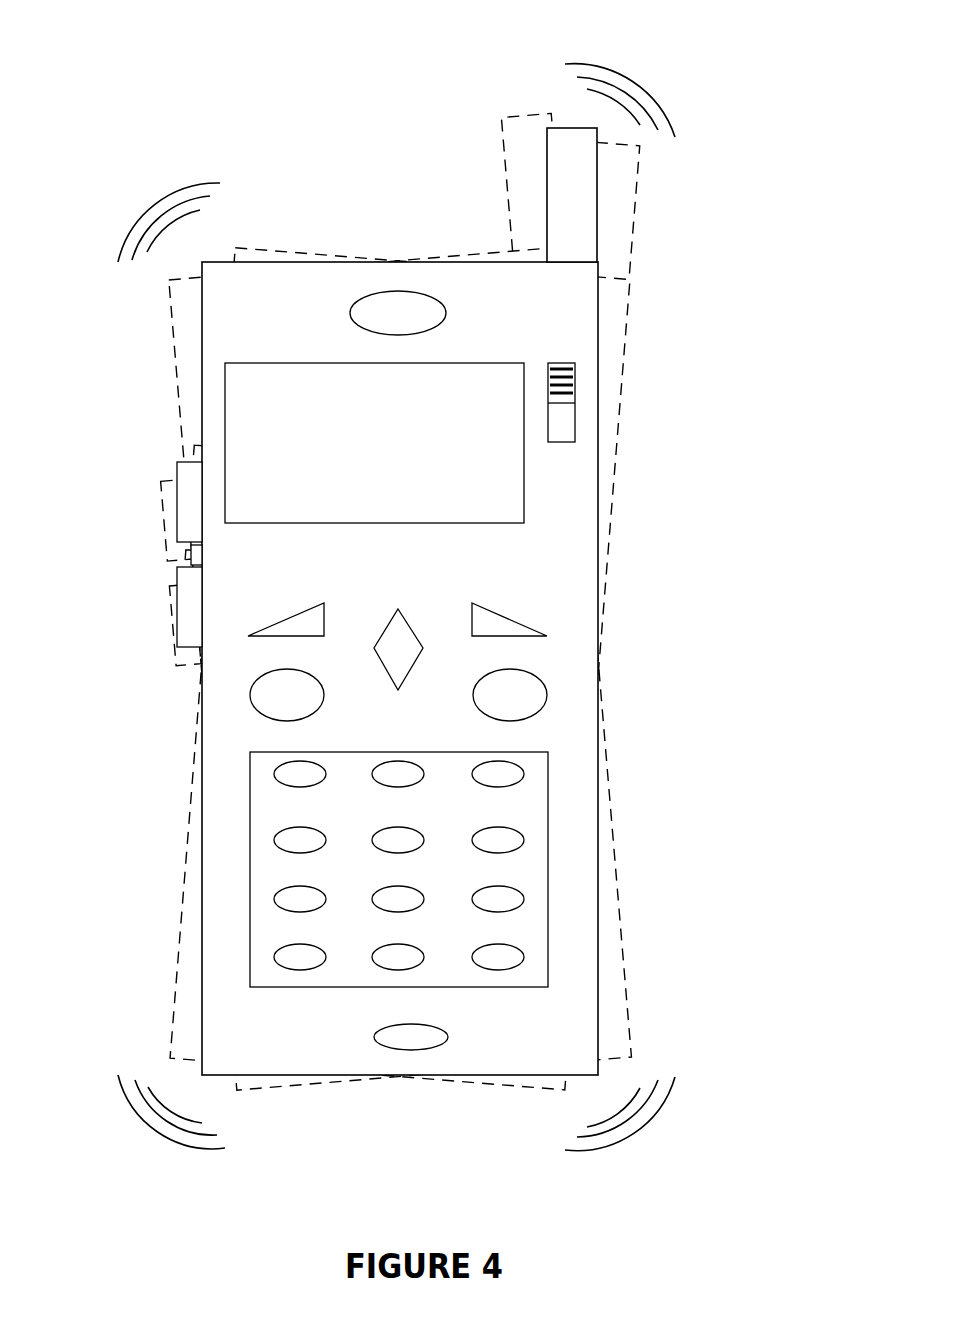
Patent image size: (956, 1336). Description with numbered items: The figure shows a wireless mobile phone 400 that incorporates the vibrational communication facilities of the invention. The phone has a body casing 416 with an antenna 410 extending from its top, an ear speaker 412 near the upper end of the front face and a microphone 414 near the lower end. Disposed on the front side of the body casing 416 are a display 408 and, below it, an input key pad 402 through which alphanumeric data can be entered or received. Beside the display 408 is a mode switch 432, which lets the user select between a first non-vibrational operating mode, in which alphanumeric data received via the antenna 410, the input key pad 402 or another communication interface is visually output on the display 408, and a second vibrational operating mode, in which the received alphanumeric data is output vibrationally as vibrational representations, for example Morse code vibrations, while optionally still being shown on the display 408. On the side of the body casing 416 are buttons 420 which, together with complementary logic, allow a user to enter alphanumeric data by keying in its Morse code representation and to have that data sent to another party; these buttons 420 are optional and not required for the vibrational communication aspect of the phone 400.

The mobile phone 400 is at (265, 86).
The input key pad 402 is at (548, 778).
The display 408 is at (432, 523).
The antenna 410 is at (597, 183).
The ear speaker 412 is at (446, 312).
The microphone 414 is at (447, 1034).
The body casing 416 is at (268, 326).
The buttons 420 is at (175, 516).
The mode switch 432 is at (565, 442).